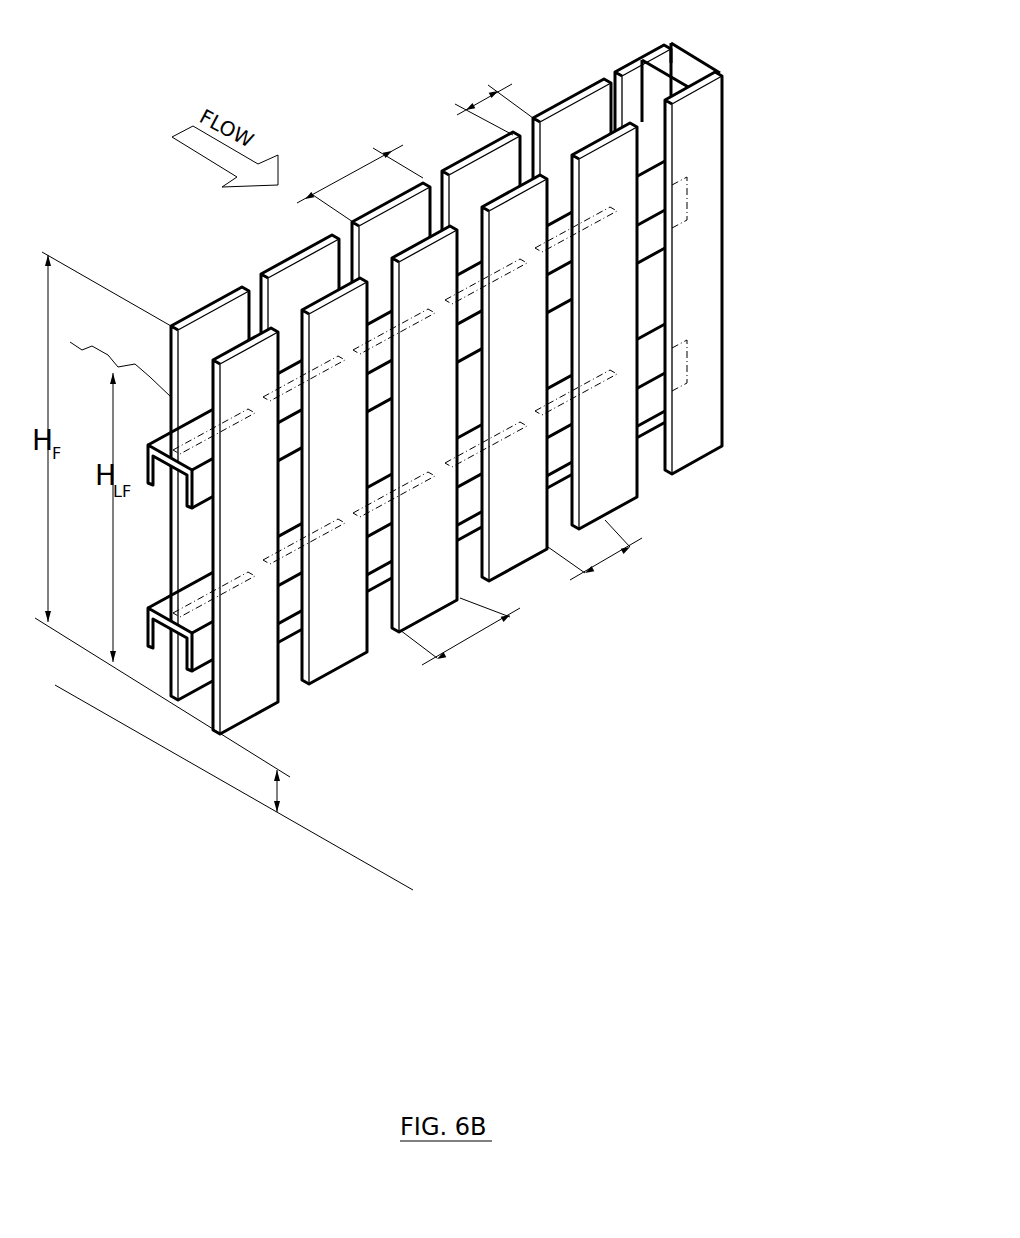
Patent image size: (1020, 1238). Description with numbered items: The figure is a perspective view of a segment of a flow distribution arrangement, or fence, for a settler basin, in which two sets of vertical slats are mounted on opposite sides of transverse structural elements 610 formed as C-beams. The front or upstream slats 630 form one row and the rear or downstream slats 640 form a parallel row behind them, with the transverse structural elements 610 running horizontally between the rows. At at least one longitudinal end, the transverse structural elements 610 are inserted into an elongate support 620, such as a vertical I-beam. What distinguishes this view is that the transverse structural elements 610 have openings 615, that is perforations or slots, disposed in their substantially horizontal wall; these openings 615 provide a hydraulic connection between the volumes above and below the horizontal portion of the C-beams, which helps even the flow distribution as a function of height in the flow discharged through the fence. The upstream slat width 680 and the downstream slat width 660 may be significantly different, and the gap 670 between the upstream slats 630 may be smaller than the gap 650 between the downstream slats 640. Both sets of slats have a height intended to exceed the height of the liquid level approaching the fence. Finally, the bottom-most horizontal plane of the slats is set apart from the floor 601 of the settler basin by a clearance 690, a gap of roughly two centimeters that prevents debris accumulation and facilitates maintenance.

The floor 601 is at (198, 767).
The transverse structural elements 610 is at (655, 223).
The openings 615 is at (290, 560).
The elongate support 620 is at (697, 125).
The upstream slats 630 is at (570, 100).
The downstream slats 640 is at (618, 476).
The gap between downstream slats 650 is at (612, 557).
The downstream slat width 660 is at (475, 633).
The gap between upstream slats 670 is at (482, 103).
The upstream slat width 680 is at (353, 170).
The clearance 690 is at (277, 790).